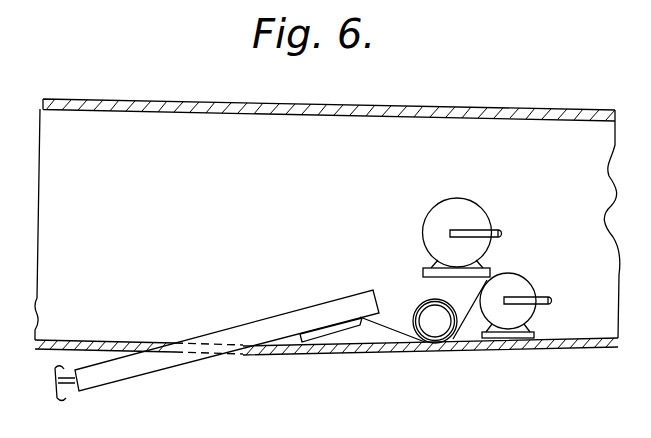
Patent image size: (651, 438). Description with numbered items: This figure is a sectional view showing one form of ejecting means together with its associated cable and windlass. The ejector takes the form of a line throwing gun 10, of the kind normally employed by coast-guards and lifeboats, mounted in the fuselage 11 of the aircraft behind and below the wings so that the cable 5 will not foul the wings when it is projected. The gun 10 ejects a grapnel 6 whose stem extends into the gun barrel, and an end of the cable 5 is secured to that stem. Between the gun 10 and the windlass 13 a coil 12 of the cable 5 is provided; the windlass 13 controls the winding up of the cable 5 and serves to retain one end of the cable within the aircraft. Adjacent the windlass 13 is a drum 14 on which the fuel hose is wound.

The cable 5 is at (392, 332).
The grapnel 6 is at (60, 401).
The line throwing gun 10 is at (229, 336).
The fuselage 11 is at (156, 118).
The coil 12 is at (428, 318).
The windlass 13 is at (520, 289).
The drum 14 is at (476, 218).